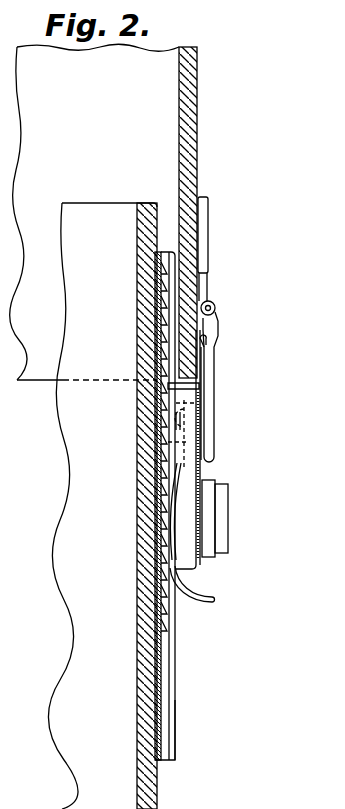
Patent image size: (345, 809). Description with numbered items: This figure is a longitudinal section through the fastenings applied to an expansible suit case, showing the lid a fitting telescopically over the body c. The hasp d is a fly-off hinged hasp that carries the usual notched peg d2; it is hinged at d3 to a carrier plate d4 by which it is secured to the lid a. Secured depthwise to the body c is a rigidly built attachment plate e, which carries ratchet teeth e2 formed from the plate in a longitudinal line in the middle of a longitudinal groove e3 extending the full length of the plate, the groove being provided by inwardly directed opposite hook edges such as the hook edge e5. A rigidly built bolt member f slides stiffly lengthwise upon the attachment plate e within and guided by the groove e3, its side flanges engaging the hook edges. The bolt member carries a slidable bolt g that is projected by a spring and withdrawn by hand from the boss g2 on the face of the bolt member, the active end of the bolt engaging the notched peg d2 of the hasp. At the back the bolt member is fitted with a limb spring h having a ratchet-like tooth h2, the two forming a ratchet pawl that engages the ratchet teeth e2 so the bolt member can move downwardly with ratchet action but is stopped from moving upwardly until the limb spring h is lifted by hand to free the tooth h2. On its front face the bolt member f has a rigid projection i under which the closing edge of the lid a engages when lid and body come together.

The lid a is at (182, 141).
The body c is at (148, 600).
The hasp d is at (211, 398).
The notched peg d2 is at (166, 422).
The hinge d3 is at (214, 309).
The carrier plate d4 is at (203, 238).
The attachment plate e is at (157, 657).
The ratchet teeth e2 is at (155, 464).
The longitudinal groove e3 is at (160, 712).
The hook edge e5 is at (171, 728).
The bolt member f is at (204, 469).
The bolt g is at (166, 441).
The boss g2 is at (229, 489).
The limb spring h is at (170, 526).
The ratchet-like tooth h2 is at (172, 550).
The rigid projection i is at (199, 364).